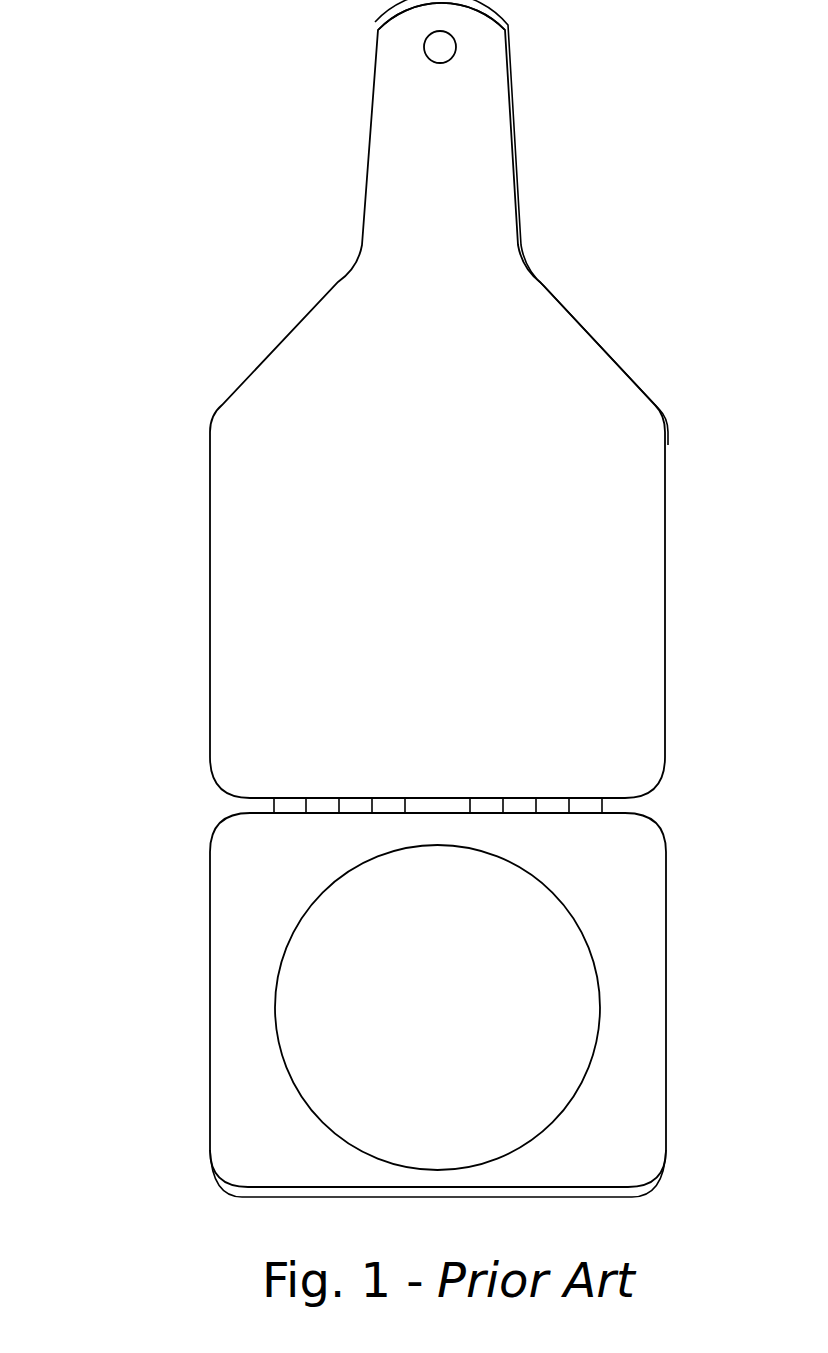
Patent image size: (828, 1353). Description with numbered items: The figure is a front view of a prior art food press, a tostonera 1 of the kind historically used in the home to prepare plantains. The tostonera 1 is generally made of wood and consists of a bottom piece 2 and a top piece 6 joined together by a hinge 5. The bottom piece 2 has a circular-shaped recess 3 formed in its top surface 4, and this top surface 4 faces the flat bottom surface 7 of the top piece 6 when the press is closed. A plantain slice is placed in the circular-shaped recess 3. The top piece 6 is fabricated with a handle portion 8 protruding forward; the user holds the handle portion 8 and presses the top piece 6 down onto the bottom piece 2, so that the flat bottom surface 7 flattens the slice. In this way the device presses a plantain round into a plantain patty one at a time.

The tostonera 1 is at (138, 56).
The bottom piece 2 is at (208, 898).
The circular-shaped recess 3 is at (275, 998).
The top surface 4 is at (250, 1136).
The hinge 5 is at (518, 806).
The top piece 6 is at (210, 477).
The flat bottom surface 7 is at (355, 580).
The handle portion 8 is at (368, 148).